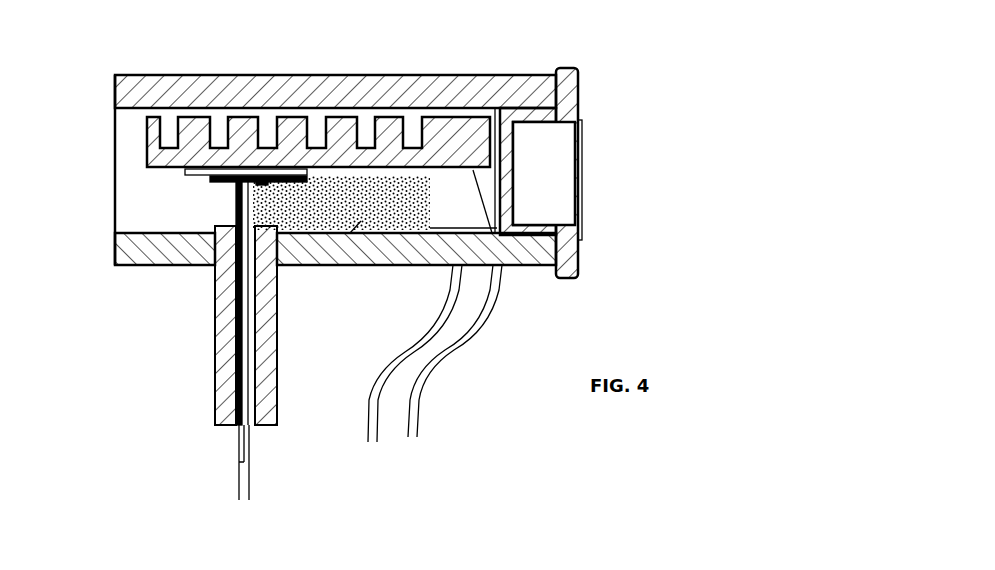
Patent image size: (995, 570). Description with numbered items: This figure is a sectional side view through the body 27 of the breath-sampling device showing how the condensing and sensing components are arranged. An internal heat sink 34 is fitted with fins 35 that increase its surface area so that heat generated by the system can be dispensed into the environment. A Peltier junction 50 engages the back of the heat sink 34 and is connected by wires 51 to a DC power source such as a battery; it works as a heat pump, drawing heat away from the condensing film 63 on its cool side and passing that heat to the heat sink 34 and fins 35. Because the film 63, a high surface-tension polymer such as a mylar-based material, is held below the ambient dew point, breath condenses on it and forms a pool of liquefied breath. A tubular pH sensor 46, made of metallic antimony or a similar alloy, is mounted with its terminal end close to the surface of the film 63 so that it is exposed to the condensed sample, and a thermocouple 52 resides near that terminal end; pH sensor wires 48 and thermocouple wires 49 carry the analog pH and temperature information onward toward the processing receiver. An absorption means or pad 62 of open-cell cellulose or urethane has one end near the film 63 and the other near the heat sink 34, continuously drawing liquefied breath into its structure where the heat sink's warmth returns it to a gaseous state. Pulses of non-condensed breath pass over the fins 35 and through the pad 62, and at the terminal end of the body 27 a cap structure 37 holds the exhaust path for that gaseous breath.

The body 27 is at (460, 76).
The internal heat sink 34 is at (152, 138).
The fins 35 is at (383, 122).
The cap structure 37 is at (580, 86).
The pH sensor 46 is at (237, 443).
The pH sensor wires 48 is at (250, 481).
The thermocouple wires 49 is at (358, 422).
The Peltier junction 50 is at (183, 172).
The wires 51 is at (430, 412).
The thermocouple 52 is at (270, 183).
The absorption means or pad 62 is at (353, 265).
The condensing film 63 is at (223, 187).